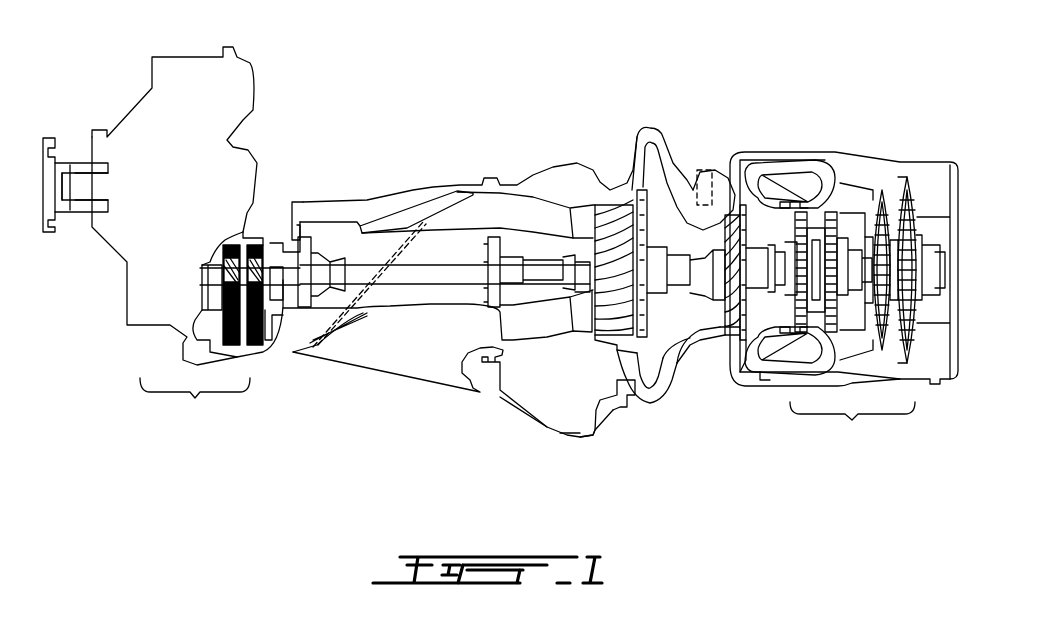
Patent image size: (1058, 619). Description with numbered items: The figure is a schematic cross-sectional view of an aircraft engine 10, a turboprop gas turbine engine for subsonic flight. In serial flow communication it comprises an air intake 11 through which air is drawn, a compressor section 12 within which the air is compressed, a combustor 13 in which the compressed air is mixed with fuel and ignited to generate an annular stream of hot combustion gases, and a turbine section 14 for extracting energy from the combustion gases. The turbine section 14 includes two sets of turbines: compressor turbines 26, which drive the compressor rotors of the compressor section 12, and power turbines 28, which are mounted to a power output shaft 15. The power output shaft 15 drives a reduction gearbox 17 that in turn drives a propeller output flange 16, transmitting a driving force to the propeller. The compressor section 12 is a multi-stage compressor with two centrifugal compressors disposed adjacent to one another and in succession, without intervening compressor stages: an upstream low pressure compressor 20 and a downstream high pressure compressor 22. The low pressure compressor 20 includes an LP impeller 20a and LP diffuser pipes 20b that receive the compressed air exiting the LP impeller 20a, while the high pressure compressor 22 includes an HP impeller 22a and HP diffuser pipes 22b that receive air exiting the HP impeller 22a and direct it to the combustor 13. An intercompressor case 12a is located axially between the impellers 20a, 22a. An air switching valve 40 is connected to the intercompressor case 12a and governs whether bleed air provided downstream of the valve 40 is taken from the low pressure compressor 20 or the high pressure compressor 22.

The aircraft engine 10 is at (443, 102).
The air intake 11 is at (414, 350).
The compressor section 12 is at (735, 330).
The intercompressor case 12a is at (694, 160).
The combustor 13 is at (815, 178).
The turbine section 14 is at (852, 426).
The power output shaft 15 is at (433, 268).
The propeller output flange 16 is at (74, 140).
The reduction gearbox 17 is at (220, 327).
The low pressure centrifugal compressor 20 is at (627, 395).
The LP impeller 20a is at (583, 345).
The LP diffuser pipes 20b is at (652, 392).
The high pressure centrifugal compressor 22 is at (740, 398).
The HP impeller 22a is at (725, 335).
The HP diffuser pipes 22b is at (768, 384).
The compressor turbine 26 is at (845, 205).
The power turbine 28 is at (915, 200).
The air switching valve 40 is at (708, 168).